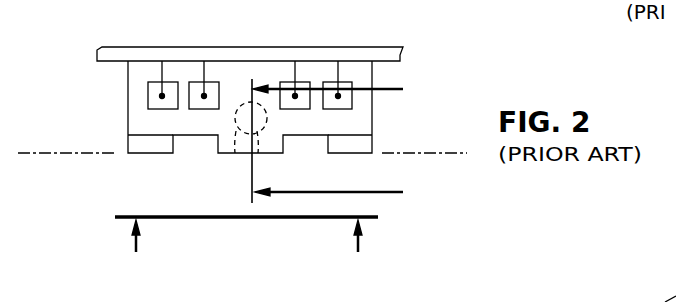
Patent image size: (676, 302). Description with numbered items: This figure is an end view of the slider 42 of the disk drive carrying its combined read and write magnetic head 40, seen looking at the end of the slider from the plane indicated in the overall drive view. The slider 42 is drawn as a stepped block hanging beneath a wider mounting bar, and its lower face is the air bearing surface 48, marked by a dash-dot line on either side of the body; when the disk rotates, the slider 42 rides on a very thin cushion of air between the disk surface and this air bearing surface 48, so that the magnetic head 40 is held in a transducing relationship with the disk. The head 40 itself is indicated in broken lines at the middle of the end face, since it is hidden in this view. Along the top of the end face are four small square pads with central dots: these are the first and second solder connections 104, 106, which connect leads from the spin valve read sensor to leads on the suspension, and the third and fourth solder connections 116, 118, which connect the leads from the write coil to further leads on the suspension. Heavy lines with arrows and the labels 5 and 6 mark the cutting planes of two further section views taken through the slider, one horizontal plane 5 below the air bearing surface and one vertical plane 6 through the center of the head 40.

The magnetic head 40 is at (236, 156).
The slider 42 is at (128, 93).
The air bearing surface 48 is at (48, 153).
The first solder connection 104 is at (148, 88).
The third solder connection 116 is at (191, 88).
The fourth solder connection 118 is at (282, 83).
The second solder connection 106 is at (323, 83).
The section line 5- 5 is at (246, 250).
The section line 6- 6 is at (337, 142).